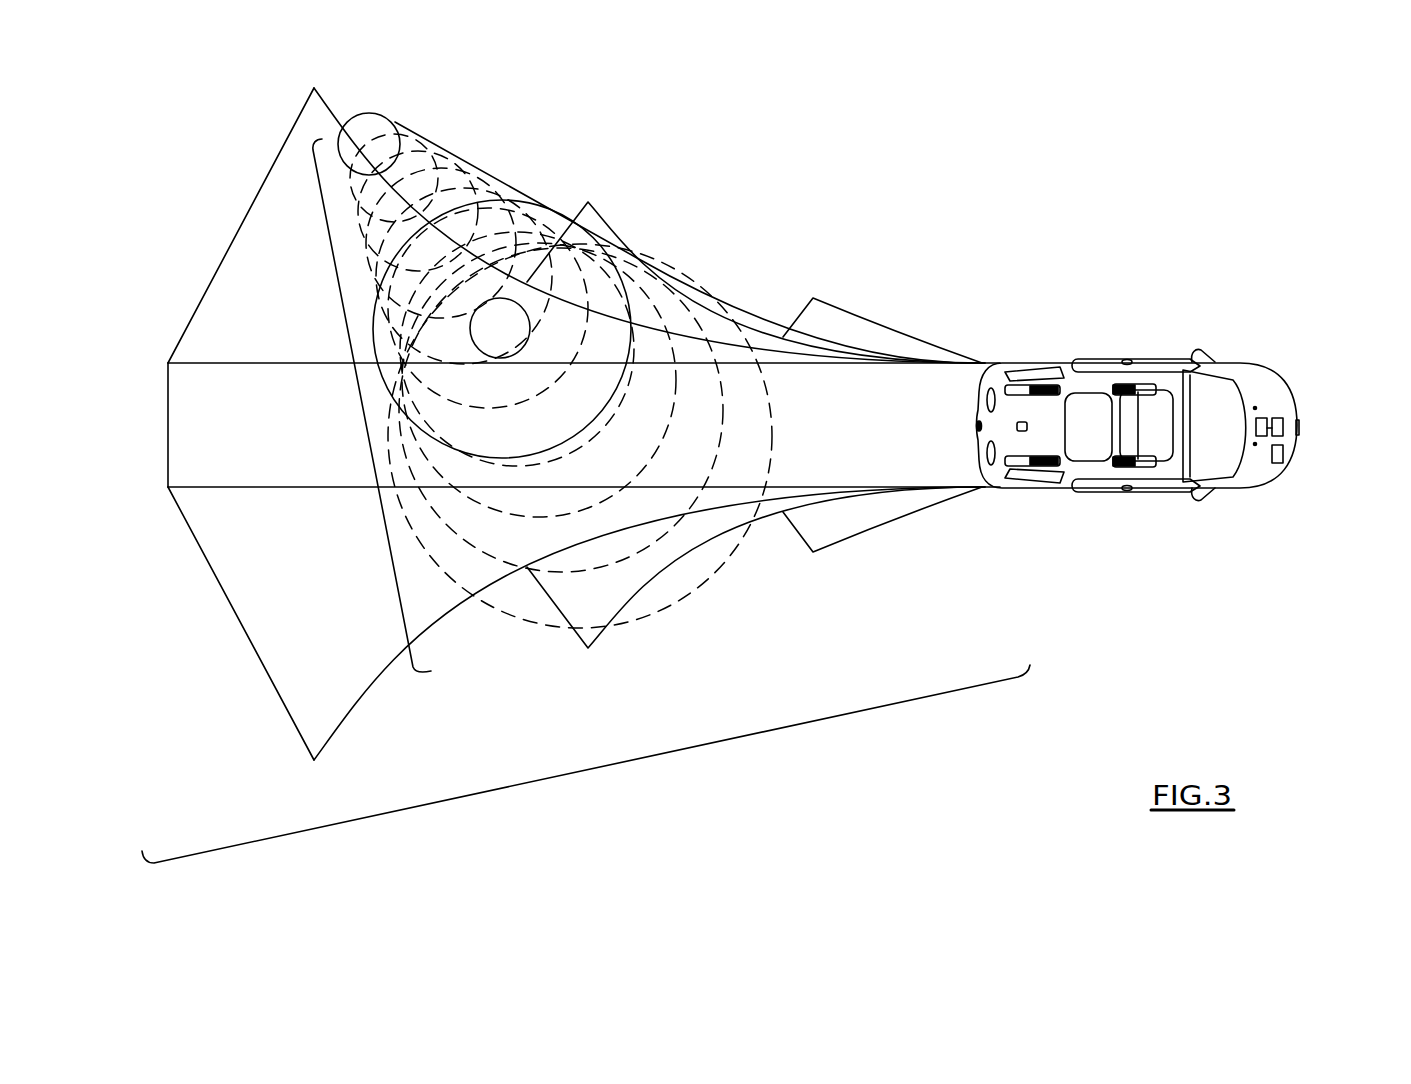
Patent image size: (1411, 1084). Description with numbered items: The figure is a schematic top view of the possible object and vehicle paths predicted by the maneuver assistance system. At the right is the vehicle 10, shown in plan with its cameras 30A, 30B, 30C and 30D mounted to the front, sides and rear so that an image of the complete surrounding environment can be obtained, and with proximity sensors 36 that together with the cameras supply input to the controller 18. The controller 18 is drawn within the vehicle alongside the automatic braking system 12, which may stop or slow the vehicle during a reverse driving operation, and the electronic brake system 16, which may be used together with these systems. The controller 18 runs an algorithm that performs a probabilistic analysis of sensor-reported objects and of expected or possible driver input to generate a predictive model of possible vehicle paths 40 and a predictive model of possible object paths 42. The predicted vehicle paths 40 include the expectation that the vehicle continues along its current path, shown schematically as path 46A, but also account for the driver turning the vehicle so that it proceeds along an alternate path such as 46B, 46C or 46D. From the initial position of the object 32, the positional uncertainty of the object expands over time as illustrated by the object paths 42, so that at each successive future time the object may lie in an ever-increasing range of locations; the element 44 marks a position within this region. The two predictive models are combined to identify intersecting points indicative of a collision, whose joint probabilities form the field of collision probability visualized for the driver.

The vehicle 10 is at (1171, 275).
The automatic braking system 12 is at (1283, 455).
The electronic brake system 16 is at (1283, 421).
The controller 18 is at (1262, 418).
The camera 30A is at (1300, 427).
The camera 30B is at (1127, 360).
The camera 30C is at (1127, 490).
The camera 30D is at (977, 426).
The initial position of the object 32 is at (390, 110).
The proximity sensors 36 is at (983, 362).
The possible vehicle paths 40 is at (584, 771).
The possible object paths 42 is at (361, 400).
The object position estimate 44 is at (543, 316).
The current vehicle path 46A is at (253, 500).
The alternate vehicle path 46B is at (364, 718).
The alternate vehicle path 46C is at (641, 602).
The alternate vehicle path 46D is at (859, 544).